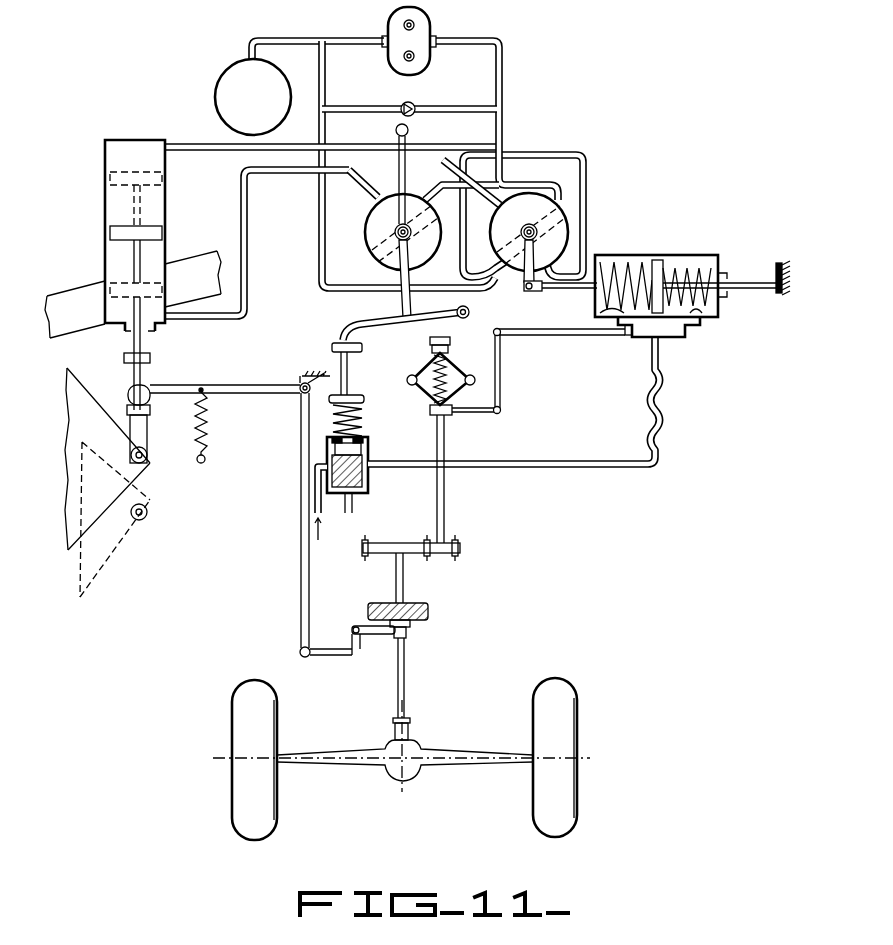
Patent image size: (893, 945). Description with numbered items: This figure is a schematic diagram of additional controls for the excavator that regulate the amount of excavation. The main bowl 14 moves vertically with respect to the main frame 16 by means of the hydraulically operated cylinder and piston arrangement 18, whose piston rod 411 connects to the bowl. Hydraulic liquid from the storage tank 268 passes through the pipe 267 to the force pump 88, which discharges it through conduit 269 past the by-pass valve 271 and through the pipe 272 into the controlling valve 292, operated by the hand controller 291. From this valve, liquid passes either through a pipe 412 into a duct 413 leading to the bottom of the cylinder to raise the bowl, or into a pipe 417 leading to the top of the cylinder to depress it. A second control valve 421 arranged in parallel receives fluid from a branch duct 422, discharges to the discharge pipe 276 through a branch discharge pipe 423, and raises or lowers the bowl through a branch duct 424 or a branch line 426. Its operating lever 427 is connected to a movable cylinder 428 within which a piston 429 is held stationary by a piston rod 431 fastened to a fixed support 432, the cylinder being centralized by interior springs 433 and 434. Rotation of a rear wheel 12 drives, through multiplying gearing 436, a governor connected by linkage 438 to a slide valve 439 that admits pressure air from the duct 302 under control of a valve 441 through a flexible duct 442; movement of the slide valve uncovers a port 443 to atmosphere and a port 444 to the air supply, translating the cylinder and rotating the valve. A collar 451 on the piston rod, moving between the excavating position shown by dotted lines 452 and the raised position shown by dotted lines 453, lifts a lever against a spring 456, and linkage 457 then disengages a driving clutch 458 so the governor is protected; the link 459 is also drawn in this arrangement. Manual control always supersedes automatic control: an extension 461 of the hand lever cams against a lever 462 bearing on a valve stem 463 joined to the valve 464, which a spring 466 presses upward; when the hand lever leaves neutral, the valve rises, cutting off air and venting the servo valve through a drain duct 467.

The rear wheels 12 is at (571, 732).
The main bowl 14 is at (92, 520).
The main frame 16 is at (76, 290).
The cylinder and piston arrangement 18 is at (166, 207).
The force pump 88 is at (430, 26).
The pipe 267 is at (343, 40).
The storage tank 268 is at (267, 108).
The conduit 269 is at (503, 88).
The by-pass valve 271 is at (413, 104).
The pipe 272 is at (503, 136).
The discharge pipe 276 is at (322, 194).
The hand controller 291 is at (396, 131).
The controlling valve 292 is at (372, 228).
The duct 302 is at (314, 505).
The piston rod 411 is at (134, 377).
The pipe 412 is at (360, 192).
The duct 413 is at (245, 243).
The pipe 417 is at (200, 147).
The second control valve 421 is at (555, 222).
The branch duct 422 is at (547, 178).
The branch discharge pipe 423 is at (484, 312).
The branch duct 424 is at (483, 192).
The branch line 426 is at (585, 234).
The operating lever 427 is at (537, 292).
The movable cylinder 428 is at (622, 260).
The piston 429 is at (660, 262).
The piston rod 431 is at (754, 290).
The fixed support 432 is at (775, 268).
The interior spring 433 is at (608, 252).
The interior spring 434 is at (700, 270).
The multiplying gearing 436 is at (425, 553).
The linkage 438 is at (502, 372).
The slide valve 439 is at (640, 338).
The valve 441 is at (369, 452).
The flexible duct 442 is at (662, 410).
The port 443 is at (603, 309).
The port 444 is at (697, 318).
The collar 451 is at (150, 411).
The dotted lines 452 is at (147, 470).
The dotted lines 453 is at (150, 358).
The spring 456 is at (208, 426).
The linkage 457 is at (380, 636).
The driving clutch 458 is at (410, 625).
The link 459 is at (240, 392).
The extension 461 is at (403, 304).
The lever 462 is at (400, 321).
The valve stem 463 is at (348, 376).
The valve 464 is at (369, 486).
The spring 466 is at (490, 272).
The drain duct 467 is at (353, 512).